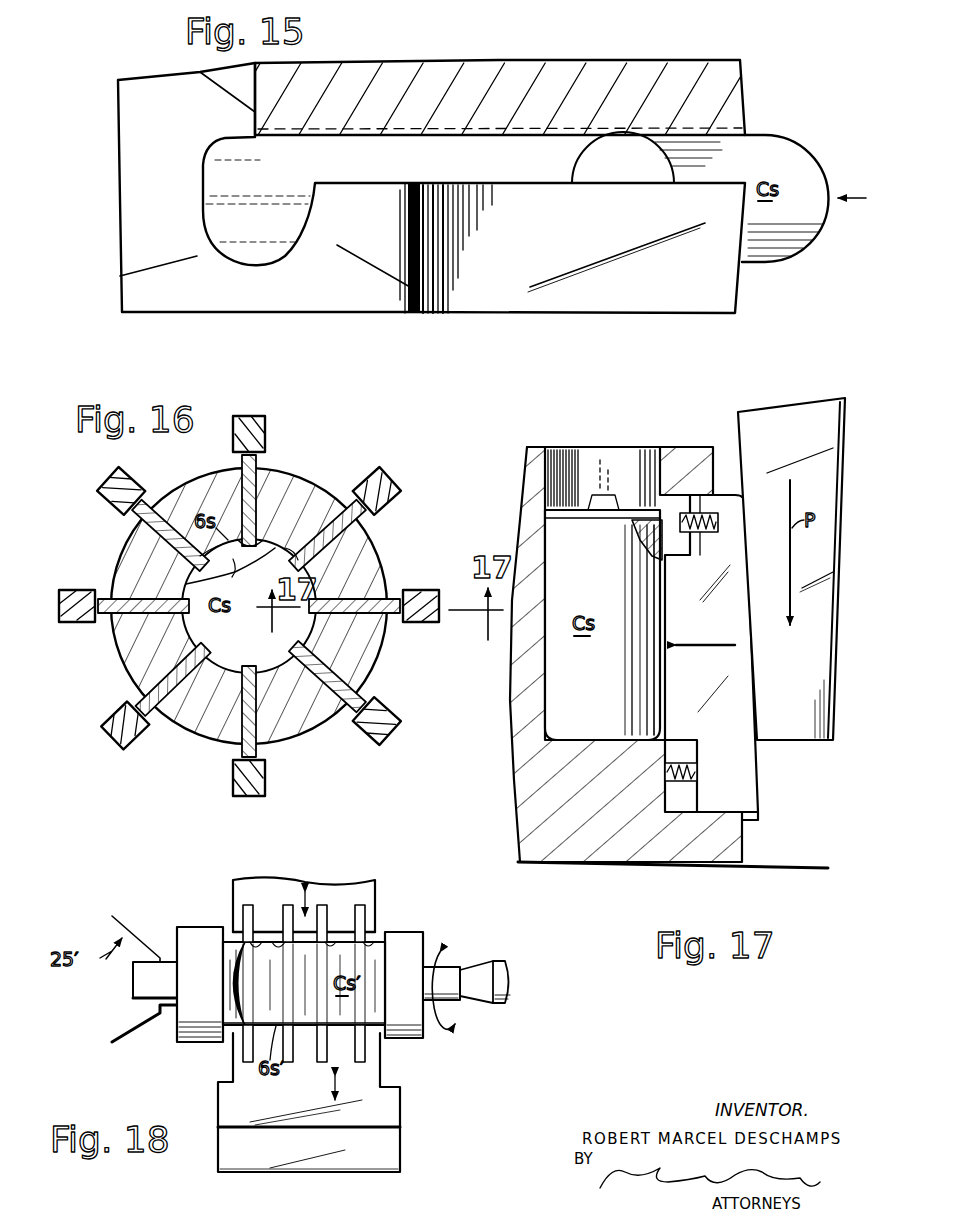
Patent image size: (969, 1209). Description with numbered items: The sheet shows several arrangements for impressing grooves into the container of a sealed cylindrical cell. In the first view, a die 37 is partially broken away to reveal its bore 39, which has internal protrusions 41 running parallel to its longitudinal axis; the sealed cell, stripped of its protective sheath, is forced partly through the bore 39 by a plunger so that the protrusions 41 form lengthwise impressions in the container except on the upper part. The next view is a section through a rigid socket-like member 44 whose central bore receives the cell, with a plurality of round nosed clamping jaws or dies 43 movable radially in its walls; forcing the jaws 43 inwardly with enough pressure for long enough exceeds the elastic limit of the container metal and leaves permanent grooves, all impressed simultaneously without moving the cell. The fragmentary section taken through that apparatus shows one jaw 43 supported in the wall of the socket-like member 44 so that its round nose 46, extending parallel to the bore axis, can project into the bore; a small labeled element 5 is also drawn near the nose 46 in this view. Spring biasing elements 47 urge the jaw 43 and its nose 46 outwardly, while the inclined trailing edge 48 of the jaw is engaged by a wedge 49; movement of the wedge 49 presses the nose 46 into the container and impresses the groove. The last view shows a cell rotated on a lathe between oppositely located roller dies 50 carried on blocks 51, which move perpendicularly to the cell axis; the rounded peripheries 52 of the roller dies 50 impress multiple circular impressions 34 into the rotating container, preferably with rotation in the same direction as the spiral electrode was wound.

In FIG. 15, the die 37 is at (345, 300).
In FIG. 15, the bore 39 is at (291, 186).
In FIG. 15, the internal protrusions 41 is at (236, 201).
In FIG. 16, the clamping jaws or dies 43 is at (333, 500).
In FIG. 17, the clamping jaws or dies 43 is at (731, 636).
In FIG. 16, the socket-like member 44 is at (362, 554).
In FIG. 17, the socket-like member 44 is at (582, 850).
In FIG. 16, the round nose 46 is at (263, 538).
In FIG. 17, the round nose 46 is at (662, 592).
In FIG. 16, the wedge 49 is at (264, 431).
In FIG. 17, the wedge 49 is at (804, 670).
In FIG. 17, the tooth 5 is at (629, 547).
In FIG. 17, the spring biasing elements 47 is at (702, 533).
In FIG. 17, the trailing edge 48 is at (750, 690).
In FIG. 18, the circular impressions 34 is at (312, 997).
In FIG. 18, the blocks 51 is at (287, 893).
In FIG. 18, the rounded peripheries 52 is at (262, 940).
In FIG. 18, the roller dies 50 is at (360, 922).